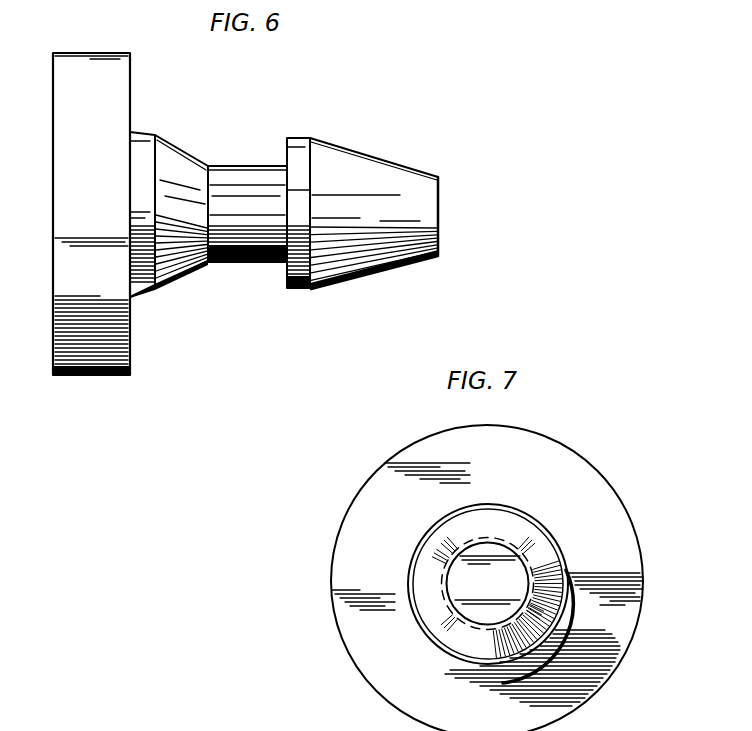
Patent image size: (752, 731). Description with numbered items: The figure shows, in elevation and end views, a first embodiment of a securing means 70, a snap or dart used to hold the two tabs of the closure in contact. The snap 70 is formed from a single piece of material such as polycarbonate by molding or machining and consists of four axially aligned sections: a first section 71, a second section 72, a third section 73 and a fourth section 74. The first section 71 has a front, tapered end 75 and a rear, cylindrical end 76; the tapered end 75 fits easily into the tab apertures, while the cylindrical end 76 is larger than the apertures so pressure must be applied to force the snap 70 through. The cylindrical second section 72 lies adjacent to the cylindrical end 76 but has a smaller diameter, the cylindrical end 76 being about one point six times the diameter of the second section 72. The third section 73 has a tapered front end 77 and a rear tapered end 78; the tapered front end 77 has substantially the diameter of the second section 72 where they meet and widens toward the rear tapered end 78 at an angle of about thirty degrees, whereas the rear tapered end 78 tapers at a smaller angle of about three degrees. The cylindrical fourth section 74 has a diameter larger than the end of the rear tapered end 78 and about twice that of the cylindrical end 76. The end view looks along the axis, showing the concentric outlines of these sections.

In FIG. 6, the expandable mandrel 70 is at (440, 198).
In FIG. 7, the expandable mandrel 70 is at (463, 583).
In FIG. 6, the tapered nose portion 71 is at (382, 272).
In FIG. 6, the cylindrical shank portion 72 is at (253, 262).
In FIG. 6, the tapered transition portion 73 is at (185, 280).
In FIG. 6, the base flange 74 is at (89, 376).
In FIG. 6, the conical body 75 is at (385, 172).
In FIG. 7, the conical body 75 is at (430, 593).
In FIG. 6, the collar 76 is at (306, 137).
In FIG. 6, the tapered shoulder 77 is at (186, 152).
In FIG. 6, the annular ring 78 is at (144, 133).
In FIG. 7, the annular ring 78 is at (547, 533).